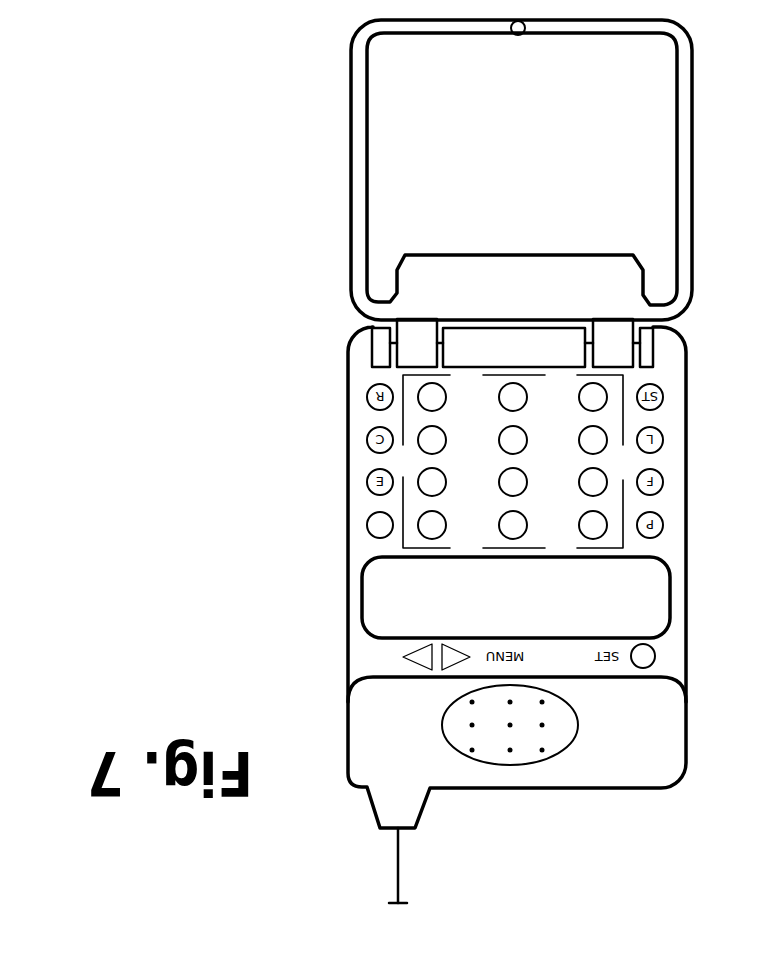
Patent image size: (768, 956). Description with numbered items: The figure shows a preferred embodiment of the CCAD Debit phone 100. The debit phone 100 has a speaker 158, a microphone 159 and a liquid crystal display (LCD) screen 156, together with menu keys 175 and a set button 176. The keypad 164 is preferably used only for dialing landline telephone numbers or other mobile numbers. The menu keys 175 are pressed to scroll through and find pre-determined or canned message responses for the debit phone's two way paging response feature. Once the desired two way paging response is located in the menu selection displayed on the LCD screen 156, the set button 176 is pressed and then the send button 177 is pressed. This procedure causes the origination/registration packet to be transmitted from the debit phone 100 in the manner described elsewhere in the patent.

The CCAD Debit phone 100 is at (684, 690).
The liquid crystal display (LCD) screen 156 is at (653, 613).
The speaker 158 is at (495, 750).
The microphone 159 is at (505, 29).
The keypad 164 is at (624, 512).
The menu keys 175 is at (403, 656).
The set button 176 is at (655, 655).
The send button 177 is at (368, 517).